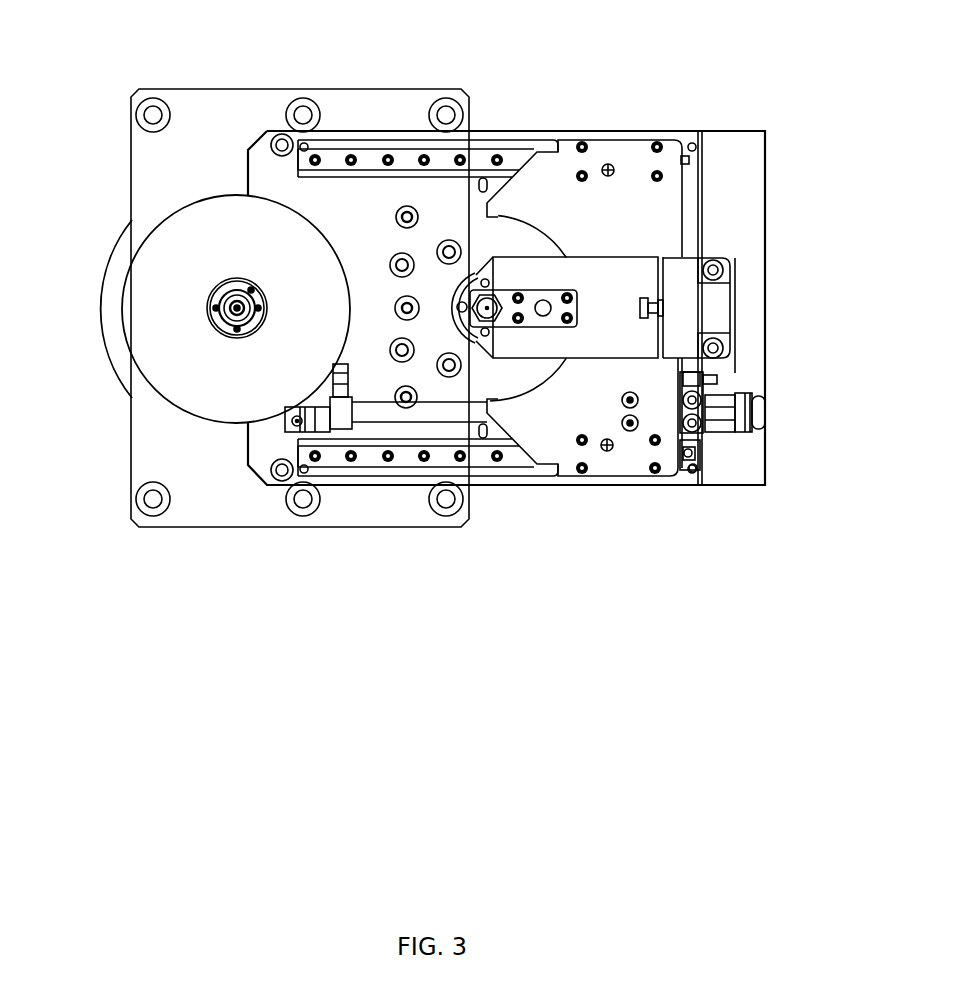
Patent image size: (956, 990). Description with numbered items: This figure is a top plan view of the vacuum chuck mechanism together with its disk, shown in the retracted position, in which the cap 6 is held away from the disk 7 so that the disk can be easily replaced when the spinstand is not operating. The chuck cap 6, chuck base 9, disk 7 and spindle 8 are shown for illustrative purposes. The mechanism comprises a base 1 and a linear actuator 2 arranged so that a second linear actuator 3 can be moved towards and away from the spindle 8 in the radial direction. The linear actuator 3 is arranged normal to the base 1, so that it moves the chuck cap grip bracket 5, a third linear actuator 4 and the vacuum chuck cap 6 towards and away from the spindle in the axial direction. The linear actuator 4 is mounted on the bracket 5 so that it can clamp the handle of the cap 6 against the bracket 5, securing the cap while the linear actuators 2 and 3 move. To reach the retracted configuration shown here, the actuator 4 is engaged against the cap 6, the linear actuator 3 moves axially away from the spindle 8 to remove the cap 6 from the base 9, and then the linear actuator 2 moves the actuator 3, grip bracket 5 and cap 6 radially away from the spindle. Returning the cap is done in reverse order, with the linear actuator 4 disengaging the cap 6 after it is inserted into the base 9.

The base 1 is at (540, 485).
The linear actuator 2 is at (722, 432).
The linear actuator 3 is at (745, 327).
The linear actuator 4 is at (485, 283).
The chuck cap grip bracket 5 is at (623, 272).
The vacuum chuck cap 6 is at (450, 284).
The disk 7 is at (162, 292).
The spindle 8 is at (196, 498).
The chuck base 9 is at (227, 282).